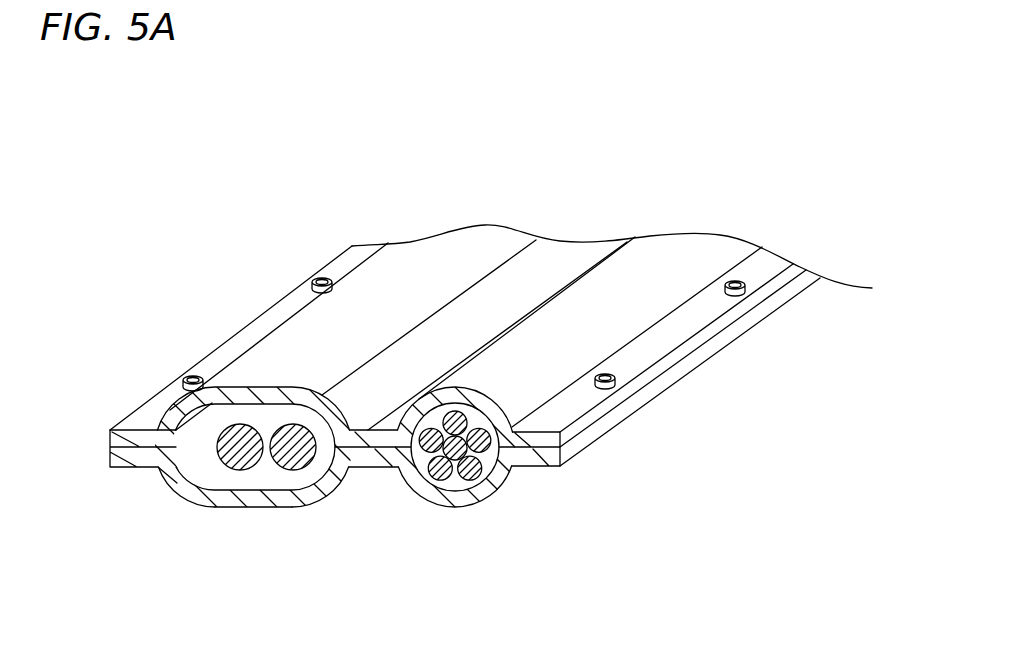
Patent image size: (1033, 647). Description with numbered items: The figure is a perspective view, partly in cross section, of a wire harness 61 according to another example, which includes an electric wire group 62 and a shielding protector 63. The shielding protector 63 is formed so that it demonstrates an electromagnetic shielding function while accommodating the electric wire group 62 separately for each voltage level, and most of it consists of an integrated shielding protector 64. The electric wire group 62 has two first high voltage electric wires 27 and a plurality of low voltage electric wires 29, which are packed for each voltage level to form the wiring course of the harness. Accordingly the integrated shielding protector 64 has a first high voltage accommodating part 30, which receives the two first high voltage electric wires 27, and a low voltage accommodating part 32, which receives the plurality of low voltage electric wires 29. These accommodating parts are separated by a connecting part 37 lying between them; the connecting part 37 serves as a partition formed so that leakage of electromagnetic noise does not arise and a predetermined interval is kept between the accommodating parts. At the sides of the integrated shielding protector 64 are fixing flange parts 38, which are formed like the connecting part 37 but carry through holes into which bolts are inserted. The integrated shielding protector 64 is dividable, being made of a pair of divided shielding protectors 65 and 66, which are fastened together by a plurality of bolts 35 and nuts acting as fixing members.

The first high voltage electric wire 27 is at (228, 468).
The low voltage electric wire 29 is at (445, 470).
The first high voltage accommodating part 30 is at (247, 441).
The low voltage accommodating part 32 is at (428, 500).
The bolt 35 is at (325, 280).
The connecting part 37 is at (390, 410).
The fixing flange part 38 is at (143, 420).
The wire harness 61 is at (740, 175).
The electric wire group 62 is at (345, 340).
The shielding protector 63 is at (657, 235).
The integrated shielding protector 64 is at (587, 307).
The divided shielding protector 65 is at (287, 347).
The divided shielding protector 66 is at (302, 510).